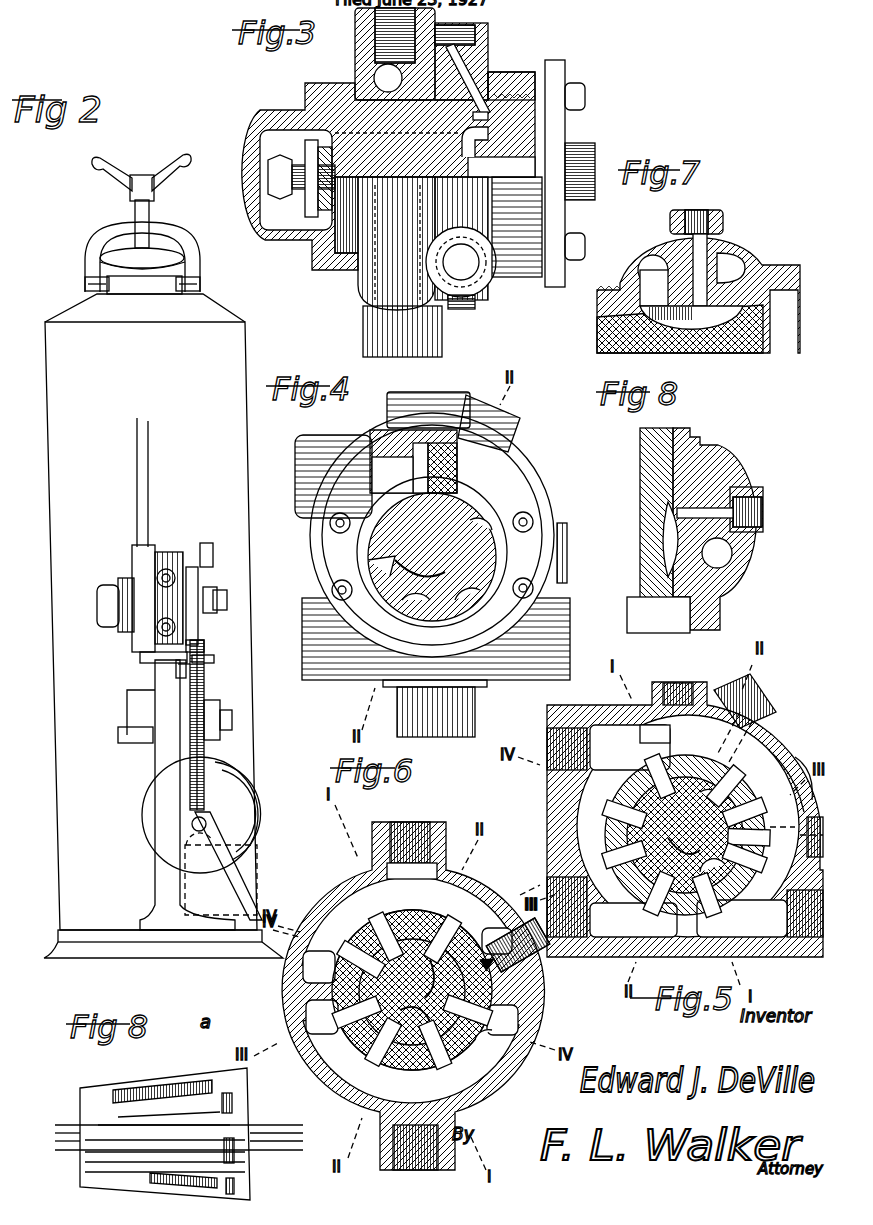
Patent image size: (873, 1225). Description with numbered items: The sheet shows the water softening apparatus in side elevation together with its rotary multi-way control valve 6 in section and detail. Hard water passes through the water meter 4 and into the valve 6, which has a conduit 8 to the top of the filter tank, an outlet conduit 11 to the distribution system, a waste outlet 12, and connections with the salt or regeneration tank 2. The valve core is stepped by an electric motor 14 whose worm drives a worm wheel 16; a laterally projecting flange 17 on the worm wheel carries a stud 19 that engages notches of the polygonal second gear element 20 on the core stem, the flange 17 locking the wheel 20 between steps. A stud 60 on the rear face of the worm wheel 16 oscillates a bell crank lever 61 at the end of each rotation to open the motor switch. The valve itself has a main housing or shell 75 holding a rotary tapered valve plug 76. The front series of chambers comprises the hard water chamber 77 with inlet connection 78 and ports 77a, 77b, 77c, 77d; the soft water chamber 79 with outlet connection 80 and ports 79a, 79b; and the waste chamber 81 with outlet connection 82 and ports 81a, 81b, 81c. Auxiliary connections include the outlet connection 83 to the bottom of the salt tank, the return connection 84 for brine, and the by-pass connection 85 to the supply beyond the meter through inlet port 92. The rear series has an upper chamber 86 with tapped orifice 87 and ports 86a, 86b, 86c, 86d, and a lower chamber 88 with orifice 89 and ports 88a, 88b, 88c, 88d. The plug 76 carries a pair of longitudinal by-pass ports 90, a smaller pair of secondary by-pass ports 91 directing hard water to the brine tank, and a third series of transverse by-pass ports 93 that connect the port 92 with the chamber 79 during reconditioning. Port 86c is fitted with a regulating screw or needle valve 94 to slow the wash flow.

In FIG. 2, the salt or regeneration tank 2 is at (151, 542).
In FIG. 2, the water meter 4 is at (127, 704).
In FIG. 2, the rotary multi-way control valve 6 is at (140, 628).
In FIG. 2, the conduit 8 is at (149, 506).
In FIG. 2, the outlet conduit 11 is at (157, 575).
In FIG. 2, the waste outlet 12 is at (160, 640).
In FIG. 2, the electric motor 14 is at (245, 810).
In FIG. 2, the worm wheel 16 is at (208, 770).
In FIG. 2, the laterally projecting flange 17 is at (205, 702).
In FIG. 2, the stud 19 is at (214, 668).
In FIG. 2, the second gear element (polygonal wheel) 20 is at (216, 590).
In FIG. 2, the stud 60 is at (180, 680).
In FIG. 2, the bell crank lever 61 is at (184, 664).
In FIG. 3, the main housing or shell 75 is at (494, 60).
In FIG. 7, the main housing or shell 75 is at (746, 246).
In FIG. 4, the main housing or shell 75 is at (515, 478).
In FIG. 8, the main housing or shell 75 is at (740, 458).
In FIG. 5, the main housing or shell 75 is at (568, 818).
In FIG. 6, the main housing or shell 75 is at (342, 888).
In FIG. 3, the rotary tapered core or valve plug 76 is at (355, 251).
In FIG. 7, the rotary tapered core or valve plug 76 is at (727, 343).
In FIG. 4, the rotary tapered core or valve plug 76 is at (432, 552).
In FIG. 8, the rotary tapered core or valve plug 76 is at (650, 478).
In FIG. 5, the rotary tapered core or valve plug 76 is at (685, 835).
In FIG. 6, the rotary tapered core or valve plug 76 is at (412, 990).
In FIG. 8A, the rotary tapered core or valve plug 76 is at (179, 1134).
In FIG. 5, the inlet or hard water chamber 77 is at (742, 918).
In FIG. 5, the port 77a is at (738, 882).
In FIG. 8, the port 77b is at (708, 553).
In FIG. 5, the port 77c is at (711, 790).
In FIG. 5, the port 77d is at (750, 867).
In FIG. 4, the tapped pipe inlet connection 78 is at (560, 625).
In FIG. 5, the tapped pipe inlet connection 78 is at (812, 968).
In FIG. 4, the soft water outlet or distribution chamber 79 is at (392, 475).
In FIG. 5, the soft water outlet or distribution chamber 79 is at (630, 747).
In FIG. 5, the port 79a is at (655, 760).
In FIG. 4, the port 79b is at (390, 455).
In FIG. 4, the tapped pipe outlet connection 80 is at (298, 452).
In FIG. 5, the tapped pipe outlet connection 80 is at (554, 736).
In FIG. 5, the waste chamber 81 is at (633, 920).
In FIG. 5, the port 81a is at (612, 813).
In FIG. 5, the port 81b is at (656, 905).
In FIG. 5, the port 81c is at (614, 856).
In FIG. 5, the tapped pipe outlet connection 82 is at (575, 965).
In FIG. 3, the outlet connection 83 is at (520, 184).
In FIG. 4, the outlet connection 83 is at (568, 548).
In FIG. 8, the outlet connection 83 is at (765, 510).
In FIG. 5, the outlet connection 83 is at (803, 760).
In FIG. 7, the return connection 84 is at (706, 214).
In FIG. 4, the return connection 84 is at (510, 420).
In FIG. 5, the return connection 84 is at (770, 682).
In FIG. 3, the by-pass connection 85 is at (490, 47).
In FIG. 4, the by-pass connection 85 is at (452, 400).
In FIG. 5, the by-pass connection 85 is at (688, 668).
In FIG. 6, the upper chamber 86 is at (378, 928).
In FIG. 6, the port 86a is at (388, 920).
In FIG. 7, the port 86b is at (653, 297).
In FIG. 6, the port 86b is at (440, 920).
In FIG. 6, the port 86c is at (478, 960).
In FIG. 6, the port 86d is at (319, 967).
In FIG. 6, the tapped pipe orifice 87 is at (415, 830).
In FIG. 6, the lower chamber 88 is at (446, 1043).
In FIG. 6, the port 88a is at (448, 1055).
In FIG. 6, the port 88b is at (378, 1055).
In FIG. 6, the port 88c is at (322, 1018).
In FIG. 6, the port 88d is at (502, 1020).
In FIG. 6, the tapped pipe connection orifice 89 is at (420, 1160).
In FIG. 7, the by-pass ports 90 is at (691, 318).
In FIG. 4, the by-pass ports 90 is at (430, 559).
In FIG. 5, the by-pass ports 90 is at (722, 790).
In FIG. 6, the by-pass ports 90 is at (362, 955).
In FIG. 8A, the by-pass ports 90 is at (155, 1092).
In FIG. 4, the secondary by-pass ports 91 is at (432, 556).
In FIG. 8, the secondary by-pass ports 91 is at (664, 545).
In FIG. 5, the secondary by-pass ports 91 is at (698, 834).
In FIG. 6, the secondary by-pass ports 91 is at (427, 991).
In FIG. 8A, the secondary by-pass ports 91 is at (155, 1185).
In FIG. 3, the inlet port 92 is at (493, 53).
In FIG. 4, the inlet port 92 is at (440, 465).
In FIG. 3, the third series of by-pass ports 93 is at (505, 80).
In FIG. 4, the third series of by-pass ports 93 is at (455, 628).
In FIG. 8A, the third series of by-pass ports 93 is at (232, 1182).
In FIG. 6, the regulating screw or needle valve 94 is at (500, 958).